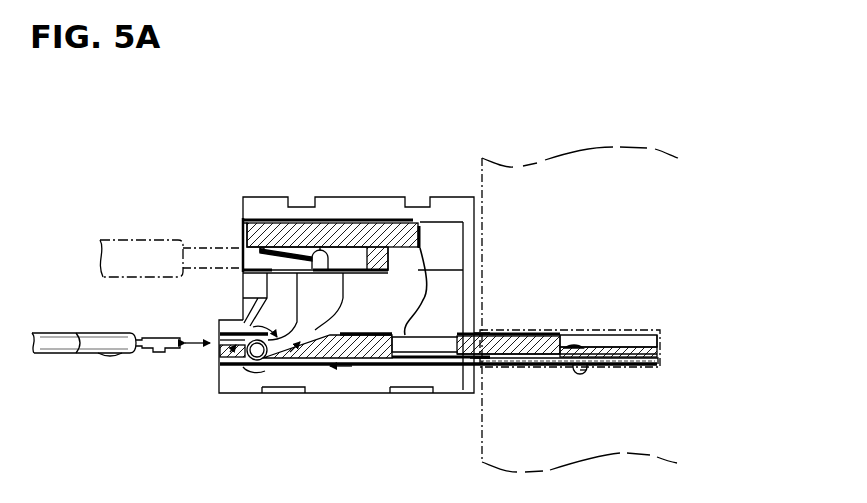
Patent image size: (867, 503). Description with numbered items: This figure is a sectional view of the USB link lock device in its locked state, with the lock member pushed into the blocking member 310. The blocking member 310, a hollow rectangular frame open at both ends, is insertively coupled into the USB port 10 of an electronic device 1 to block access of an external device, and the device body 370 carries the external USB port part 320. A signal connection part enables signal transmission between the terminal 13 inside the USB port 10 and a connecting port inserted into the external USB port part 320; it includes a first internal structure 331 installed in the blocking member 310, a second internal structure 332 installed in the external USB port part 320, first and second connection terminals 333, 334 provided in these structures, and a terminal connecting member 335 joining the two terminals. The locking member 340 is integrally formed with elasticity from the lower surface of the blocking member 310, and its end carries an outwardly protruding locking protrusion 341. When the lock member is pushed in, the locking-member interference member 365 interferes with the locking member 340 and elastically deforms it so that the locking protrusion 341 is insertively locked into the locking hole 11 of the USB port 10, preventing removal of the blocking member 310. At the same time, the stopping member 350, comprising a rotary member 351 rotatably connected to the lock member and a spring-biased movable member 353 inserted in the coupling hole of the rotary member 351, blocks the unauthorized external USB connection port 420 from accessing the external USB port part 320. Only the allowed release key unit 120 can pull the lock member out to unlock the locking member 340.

The electronic device 1 is at (482, 450).
The USB port 10 is at (640, 330).
The locking hole 11 is at (588, 372).
The terminal 13 is at (662, 338).
The release key unit 120 is at (87, 330).
The blocking member 310 is at (661, 364).
The external USB port part 320 is at (367, 221).
The first internal structure 331 is at (530, 334).
The second internal structure 332 is at (400, 228).
The first connection terminal 333 is at (587, 350).
The second connection terminal 334 is at (308, 249).
The terminal connecting member 335 is at (430, 302).
The locking member 340 is at (534, 368).
The locking protrusion 341 is at (582, 371).
The stopping member 350 is at (313, 365).
The rotary member 351 is at (373, 361).
The movable member 353 is at (325, 247).
The locking-member interference member 365 is at (465, 368).
The device body 370 is at (255, 193).
The external USB connection port 420 is at (170, 238).